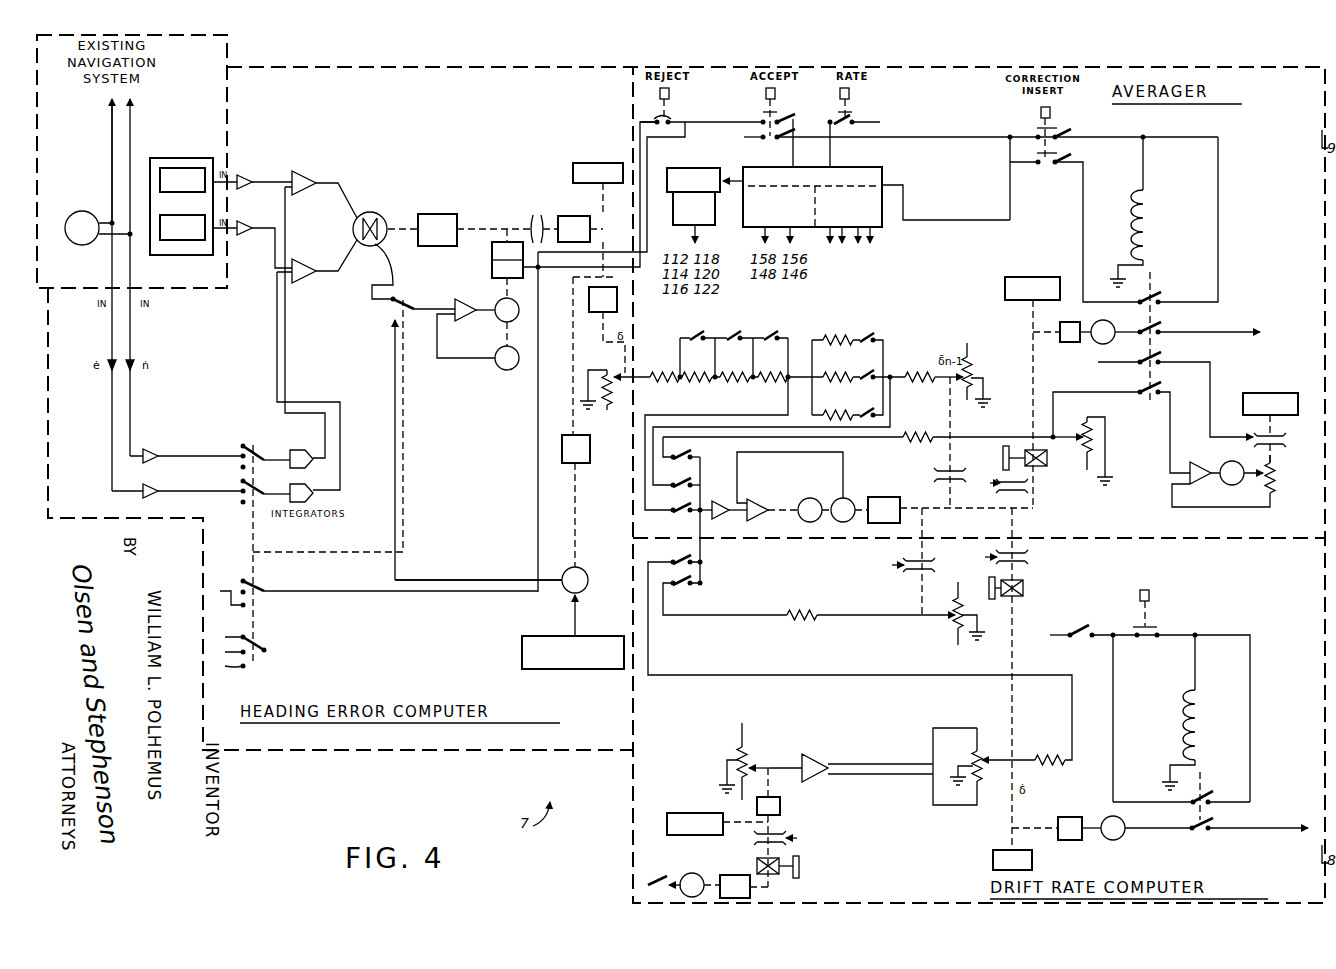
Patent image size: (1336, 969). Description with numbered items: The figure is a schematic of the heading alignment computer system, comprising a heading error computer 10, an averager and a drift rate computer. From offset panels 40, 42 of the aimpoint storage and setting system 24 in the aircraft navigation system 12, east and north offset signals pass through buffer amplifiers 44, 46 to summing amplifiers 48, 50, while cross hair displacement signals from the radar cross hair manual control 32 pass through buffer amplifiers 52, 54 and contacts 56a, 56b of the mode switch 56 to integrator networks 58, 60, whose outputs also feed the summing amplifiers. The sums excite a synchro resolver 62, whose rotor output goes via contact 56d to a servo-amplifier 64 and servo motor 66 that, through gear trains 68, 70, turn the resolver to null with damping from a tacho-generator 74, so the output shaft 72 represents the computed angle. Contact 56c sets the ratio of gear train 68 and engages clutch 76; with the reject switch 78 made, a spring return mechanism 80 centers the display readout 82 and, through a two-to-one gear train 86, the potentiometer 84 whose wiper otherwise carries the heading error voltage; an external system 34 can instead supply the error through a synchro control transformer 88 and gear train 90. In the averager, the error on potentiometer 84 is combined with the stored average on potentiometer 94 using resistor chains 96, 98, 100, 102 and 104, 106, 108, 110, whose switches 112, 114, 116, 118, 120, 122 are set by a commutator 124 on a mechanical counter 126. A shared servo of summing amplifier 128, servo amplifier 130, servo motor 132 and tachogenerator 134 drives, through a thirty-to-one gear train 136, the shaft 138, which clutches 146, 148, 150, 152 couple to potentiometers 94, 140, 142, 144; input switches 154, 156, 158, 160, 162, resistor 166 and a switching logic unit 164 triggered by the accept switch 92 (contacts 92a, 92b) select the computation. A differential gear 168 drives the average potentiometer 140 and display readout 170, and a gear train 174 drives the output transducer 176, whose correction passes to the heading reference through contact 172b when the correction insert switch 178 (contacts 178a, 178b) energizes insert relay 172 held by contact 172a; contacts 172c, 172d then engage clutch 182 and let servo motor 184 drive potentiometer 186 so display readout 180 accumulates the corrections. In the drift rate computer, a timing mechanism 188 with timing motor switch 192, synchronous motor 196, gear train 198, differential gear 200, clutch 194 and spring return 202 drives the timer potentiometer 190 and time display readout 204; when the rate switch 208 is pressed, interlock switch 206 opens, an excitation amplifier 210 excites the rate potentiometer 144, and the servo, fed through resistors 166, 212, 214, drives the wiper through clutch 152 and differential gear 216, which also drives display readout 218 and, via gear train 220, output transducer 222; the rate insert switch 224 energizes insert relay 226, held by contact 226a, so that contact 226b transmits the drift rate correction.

The heading error computer 10 is at (246, 752).
The aircraft navigation system 12 is at (230, 50).
The aimpoint storage and setting system 24 is at (178, 256).
The radar cross hair manual control 32 is at (74, 243).
The external aircraft system 34 is at (540, 636).
The offset panel 40 is at (180, 168).
The offset panel 42 is at (177, 215).
The buffer amplifier 44 is at (249, 175).
The buffer amplifier 46 is at (247, 237).
The summing amplifier 48 is at (314, 176).
The summing amplifier 50 is at (310, 262).
The buffer amplifier 52 is at (160, 490).
The buffer amplifier 54 is at (158, 455).
The mode switch 56 is at (261, 645).
The switch contact 56a is at (262, 488).
The switch contact 56b is at (263, 452).
The switch contact 56c is at (262, 586).
The switch contact 56d is at (404, 302).
The integrator network 58 is at (305, 484).
The integrator network 60 is at (299, 450).
The synchro resolver 62 is at (367, 247).
The servo-amplifier 64 is at (467, 302).
The servo motor 66 is at (518, 305).
The gear train 68 is at (492, 255).
The gear train 70 is at (457, 214).
The output shaft 72 is at (472, 228).
The tacho-generator 74 is at (507, 370).
The electrically operated clutch 76 is at (531, 226).
The reject switch 78 is at (670, 94).
The set/reset unit 80 is at (569, 216).
The display readout 82 is at (598, 163).
The potentiometer 84 is at (607, 410).
The gear train 86 is at (617, 292).
The synchro control transformer 88 is at (588, 575).
The gear train 90 is at (590, 462).
The accept switch 92 is at (766, 93).
The accept switch contact 92a is at (790, 118).
The accept switch contact 92b is at (791, 136).
The storage potentiometer 94 is at (970, 345).
The resistor 96 is at (668, 383).
The resistor 98 is at (700, 383).
The resistor 100 is at (737, 383).
The resistor 102 is at (775, 383).
The resistor 104 is at (922, 383).
The resistor 106 is at (848, 333).
The resistor 108 is at (846, 380).
The resistor 110 is at (823, 415).
The switch 112 is at (698, 334).
The switch 114 is at (735, 334).
The switch 116 is at (772, 334).
The switch 118 is at (873, 335).
The switch 120 is at (866, 372).
The switch 122 is at (865, 412).
The commutator 124 is at (673, 221).
The mechanical counter 126 is at (688, 168).
The summing amplifier 128 is at (717, 506).
The servo amplifier 130 is at (756, 504).
The servo motor 132 is at (810, 498).
The tachogenerator 134 is at (850, 500).
The gear train 136 is at (934, 476).
The shaft 138 is at (916, 506).
The average potentiometer 140 is at (1088, 419).
The storage potentiometer 142 is at (957, 583).
The rate potentiometer 144 is at (978, 735).
The clutch 146 is at (934, 466).
The clutch 148 is at (998, 486).
The clutch 150 is at (893, 569).
The clutch 152 is at (990, 556).
The switch 154 is at (677, 452).
The switch 156 is at (669, 483).
The switch 158 is at (668, 508).
The switch 160 is at (676, 556).
The switch 162 is at (676, 579).
The switching logic unit 164 is at (799, 167).
The resistor 166 is at (906, 436).
The differential gear 168 is at (1047, 460).
The display readout 170 is at (1033, 277).
The insert relay 172 is at (1153, 204).
The hold-on contact 172a is at (1160, 300).
The relay contact 172b is at (1160, 328).
The relay contact 172c is at (1160, 360).
The relay contact 172d is at (1160, 390).
The gear train 174 is at (1066, 322).
The output transducer 176 is at (1108, 323).
The correction insert switch 178 is at (1052, 112).
The correction insert contact 178a is at (1066, 135).
The correction insert contact 178b is at (1066, 159).
The display readout 180 is at (1290, 393).
The clutch 182 is at (1277, 437).
The servo motor 184 is at (1240, 459).
The potentiometer 186 is at (1003, 450).
The timing mechanism 188 is at (811, 850).
The timer potentiometer 190 is at (744, 727).
The timing motor switch 192 is at (662, 876).
The clutch 194 is at (785, 836).
The synchronous motor 196 is at (698, 875).
The gear train 198 is at (740, 875).
The differential gear 200 is at (778, 874).
The spring return 202 is at (782, 806).
The time display readout 204 is at (705, 813).
The interlock switch 206 is at (1086, 627).
The rate switch 208 is at (852, 92).
The excitation amplifier 210 is at (821, 763).
The resistor 212 is at (810, 620).
The resistor 214 is at (1051, 766).
The differential gear 216 is at (1023, 588).
The display readout 218 is at (998, 850).
The gear train 220 is at (1068, 817).
The output transducer 222 is at (1109, 840).
The rate insert switch 224 is at (1150, 596).
The insert relay 226 is at (1201, 701).
The hold-in contact 226a is at (1213, 794).
The relay contact 226b is at (1213, 823).